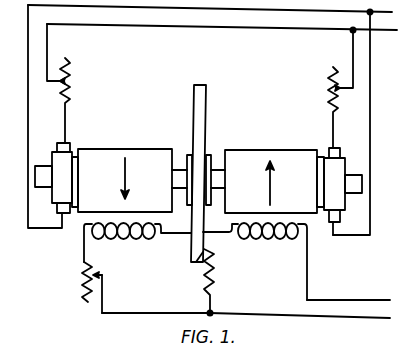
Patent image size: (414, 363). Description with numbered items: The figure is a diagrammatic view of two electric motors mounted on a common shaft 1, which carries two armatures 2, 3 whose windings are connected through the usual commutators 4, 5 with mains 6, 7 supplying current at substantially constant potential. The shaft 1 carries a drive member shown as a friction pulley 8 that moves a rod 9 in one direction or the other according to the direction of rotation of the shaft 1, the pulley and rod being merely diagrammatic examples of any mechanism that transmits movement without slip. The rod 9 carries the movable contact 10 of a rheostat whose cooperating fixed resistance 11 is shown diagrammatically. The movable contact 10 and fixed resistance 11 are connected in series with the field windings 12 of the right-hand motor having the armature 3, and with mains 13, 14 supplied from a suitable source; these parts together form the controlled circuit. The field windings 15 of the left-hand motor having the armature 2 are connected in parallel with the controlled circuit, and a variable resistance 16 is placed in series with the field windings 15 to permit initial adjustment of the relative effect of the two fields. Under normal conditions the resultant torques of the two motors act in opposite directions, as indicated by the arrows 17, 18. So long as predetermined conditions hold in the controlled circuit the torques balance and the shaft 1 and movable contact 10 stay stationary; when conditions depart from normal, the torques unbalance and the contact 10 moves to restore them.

The common shaft 1 is at (216, 168).
The armature 2 is at (108, 160).
The armature 3 is at (288, 157).
The commutator 4 is at (62, 168).
The commutator 5 is at (342, 163).
The main 6 is at (305, 11).
The main 7 is at (332, 29).
The friction pulley 8 is at (212, 158).
The rod 9 is at (199, 103).
The movable contact 10 is at (197, 259).
The fixed resistance 11 is at (216, 284).
The field windings 12 is at (284, 242).
The main 13 is at (372, 301).
The main 14 is at (370, 322).
The field windings 15 is at (160, 254).
The variable resistance 16 is at (86, 277).
The arrow 17 is at (131, 176).
The arrow 18 is at (275, 184).